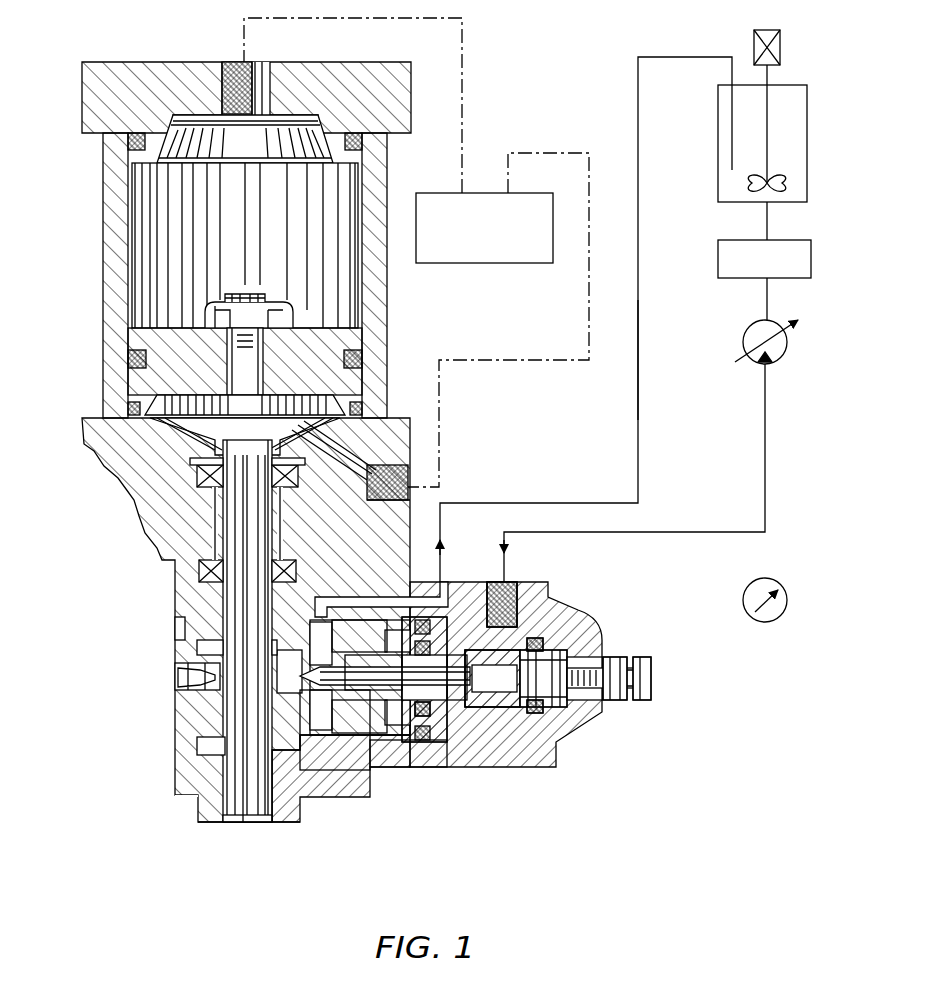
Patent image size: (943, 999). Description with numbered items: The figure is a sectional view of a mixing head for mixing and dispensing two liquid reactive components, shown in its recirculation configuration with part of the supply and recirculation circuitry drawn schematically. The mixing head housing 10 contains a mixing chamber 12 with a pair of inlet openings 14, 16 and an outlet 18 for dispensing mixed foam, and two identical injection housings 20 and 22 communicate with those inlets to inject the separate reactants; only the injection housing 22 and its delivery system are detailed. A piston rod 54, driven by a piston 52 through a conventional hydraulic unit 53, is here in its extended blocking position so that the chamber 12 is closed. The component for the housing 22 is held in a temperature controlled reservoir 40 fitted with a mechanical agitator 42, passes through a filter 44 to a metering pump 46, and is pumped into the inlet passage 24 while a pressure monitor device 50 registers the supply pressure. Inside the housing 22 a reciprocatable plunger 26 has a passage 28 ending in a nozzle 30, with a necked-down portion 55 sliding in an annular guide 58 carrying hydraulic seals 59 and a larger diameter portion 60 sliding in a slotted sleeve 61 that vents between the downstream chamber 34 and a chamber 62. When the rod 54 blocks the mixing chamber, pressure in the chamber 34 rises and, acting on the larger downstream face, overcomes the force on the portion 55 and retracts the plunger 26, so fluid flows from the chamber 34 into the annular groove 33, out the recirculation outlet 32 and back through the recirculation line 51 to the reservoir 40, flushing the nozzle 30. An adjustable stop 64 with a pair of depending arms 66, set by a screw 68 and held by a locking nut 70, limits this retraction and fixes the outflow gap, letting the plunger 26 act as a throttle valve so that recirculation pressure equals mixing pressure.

The mixing head housing 10 is at (345, 793).
The mixing chamber 12 is at (230, 750).
The inlet opening 14 is at (218, 668).
The inlet opening 16 is at (270, 662).
The outlet 18 is at (260, 822).
The injection housing 20 is at (175, 599).
The injection housing 22 is at (540, 768).
The inlet passage 24 is at (500, 595).
The plunger 26 is at (395, 705).
The passage 28 is at (480, 720).
The nozzle 30 is at (312, 672).
The recirculation outlet 32 is at (418, 600).
The annular groove 33 is at (330, 720).
The chamber 34 is at (205, 700).
The temperature controlled reservoir 40 is at (807, 150).
The mechanical agitator 42 is at (770, 92).
The filter 44 is at (790, 240).
The metering pump 46 is at (788, 346).
The pressure monitor device 50 is at (788, 603).
The recirculation line 51 is at (638, 432).
The piston 52 is at (137, 383).
The hydraulic unit 53 is at (524, 268).
The piston rod 54 is at (235, 533).
The necked-down portion 55 is at (470, 700).
The annular guide 58 is at (619, 473).
The hydraulic seals 59 is at (435, 745).
The larger diameter portion 60 is at (378, 700).
The sleeve 61 is at (388, 725).
The chamber 62 is at (435, 712).
The adjustable stop 64 is at (590, 707).
The depending arms 66 is at (510, 642).
The screw 68 is at (655, 685).
The locking nut 70 is at (610, 660).